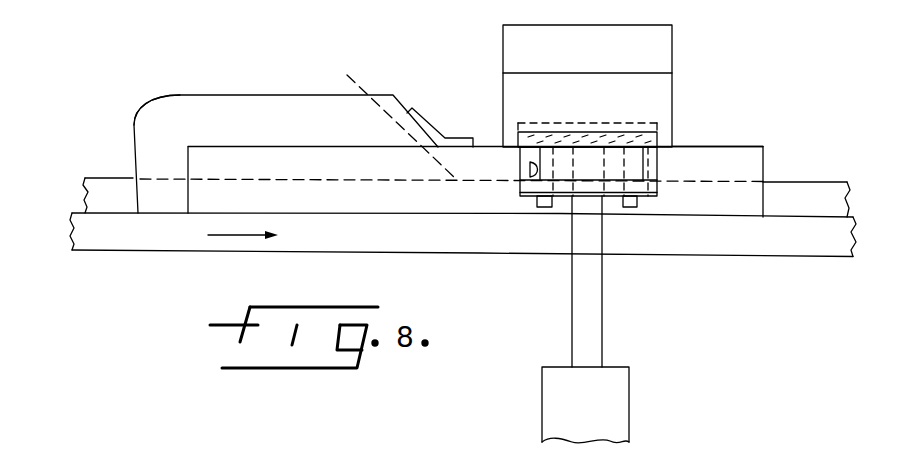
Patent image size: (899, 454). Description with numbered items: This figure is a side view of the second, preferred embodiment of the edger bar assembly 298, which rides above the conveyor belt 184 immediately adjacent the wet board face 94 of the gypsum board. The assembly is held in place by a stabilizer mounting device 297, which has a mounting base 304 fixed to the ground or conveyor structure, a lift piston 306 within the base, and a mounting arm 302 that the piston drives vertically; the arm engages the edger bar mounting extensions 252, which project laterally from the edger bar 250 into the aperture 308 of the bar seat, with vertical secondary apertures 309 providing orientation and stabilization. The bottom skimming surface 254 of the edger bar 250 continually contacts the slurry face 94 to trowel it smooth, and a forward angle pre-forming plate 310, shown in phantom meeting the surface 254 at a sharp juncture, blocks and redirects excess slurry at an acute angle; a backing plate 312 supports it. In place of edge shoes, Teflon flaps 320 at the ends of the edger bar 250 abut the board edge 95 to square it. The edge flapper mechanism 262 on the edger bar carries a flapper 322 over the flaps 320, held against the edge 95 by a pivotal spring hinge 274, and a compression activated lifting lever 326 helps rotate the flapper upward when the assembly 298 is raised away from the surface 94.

The board face 94 is at (106, 178).
The gypsum board edge 95 is at (97, 197).
The conveyor belt 184 is at (153, 243).
The edger bar 250 is at (743, 145).
The edger bar mounting extensions 252 is at (643, 163).
The bottom skimming surface 254 is at (465, 185).
The edge flapper mechanism 262 is at (198, 86).
The pivotal spring hinge 274 is at (623, 96).
The stabilizer mounting device 297 is at (518, 378).
The edger bar assembly 298 is at (714, 73).
The mounting arm 302 is at (527, 194).
The mounting base 304 is at (620, 412).
The lift piston 306 is at (592, 345).
The aperture 308 is at (537, 167).
The vertical secondary apertures 309 is at (628, 205).
The forward angle pre-forming plate 310 is at (377, 117).
The backing plate 312 is at (448, 72).
The Teflon flaps 320 is at (208, 147).
The flapper 322 is at (273, 67).
The compression activated lifting lever 326 is at (520, 30).